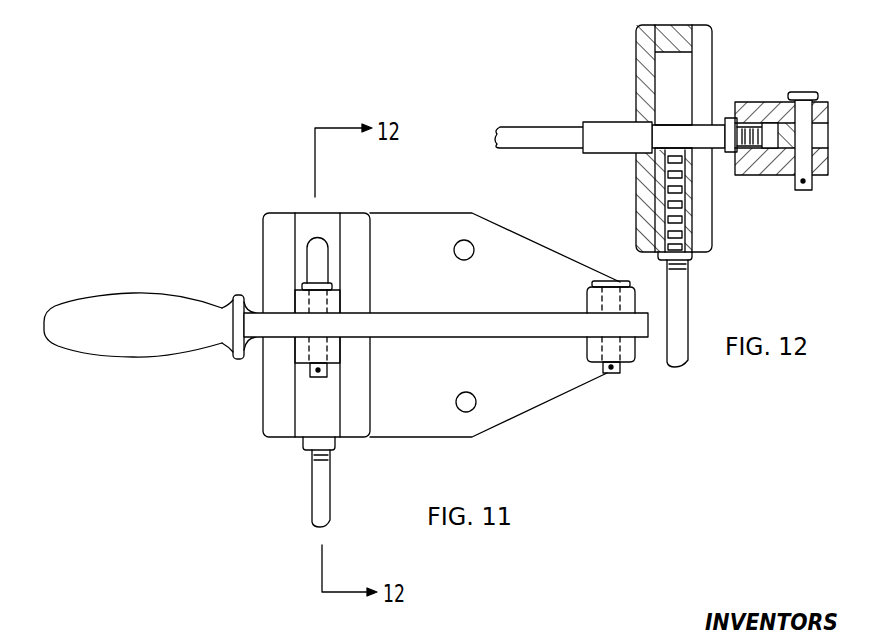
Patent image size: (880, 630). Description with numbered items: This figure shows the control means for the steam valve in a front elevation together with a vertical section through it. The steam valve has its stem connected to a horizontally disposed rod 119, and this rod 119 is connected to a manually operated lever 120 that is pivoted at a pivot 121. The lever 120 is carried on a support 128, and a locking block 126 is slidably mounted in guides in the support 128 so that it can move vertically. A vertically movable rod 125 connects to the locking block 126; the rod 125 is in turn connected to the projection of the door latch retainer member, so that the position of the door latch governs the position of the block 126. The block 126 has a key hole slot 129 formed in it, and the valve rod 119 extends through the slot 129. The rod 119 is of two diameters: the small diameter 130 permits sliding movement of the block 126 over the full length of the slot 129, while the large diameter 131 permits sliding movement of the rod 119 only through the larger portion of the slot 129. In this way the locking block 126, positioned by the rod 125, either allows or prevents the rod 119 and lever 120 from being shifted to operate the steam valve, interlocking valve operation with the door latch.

In FIG. 12, the rod 119 is at (783, 172).
In FIG. 11, the manually operated lever 120 is at (470, 316).
In FIG. 12, the manually operated lever 120 is at (773, 140).
In FIG. 11, the pivot 121 is at (612, 375).
In FIG. 12, the pivot 121 is at (803, 187).
In FIG. 11, the vertically movable rod 125 is at (318, 478).
In FIG. 12, the vertically movable rod 125 is at (688, 297).
In FIG. 11, the locking block 126 is at (307, 392).
In FIG. 12, the locking block 126 is at (663, 213).
In FIG. 11, the support 128 is at (474, 216).
In FIG. 12, the key hole slot 129 is at (663, 78).
In FIG. 12, the small diameter 130 is at (677, 132).
In FIG. 12, the large diameter 131 is at (632, 146).